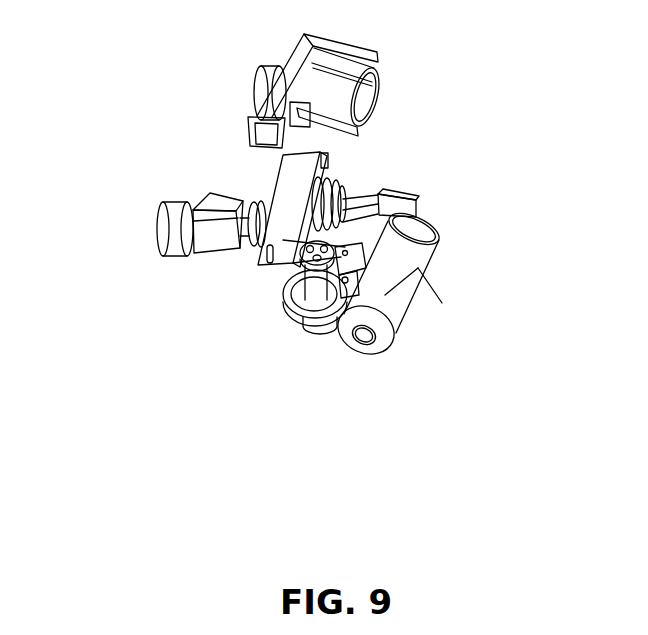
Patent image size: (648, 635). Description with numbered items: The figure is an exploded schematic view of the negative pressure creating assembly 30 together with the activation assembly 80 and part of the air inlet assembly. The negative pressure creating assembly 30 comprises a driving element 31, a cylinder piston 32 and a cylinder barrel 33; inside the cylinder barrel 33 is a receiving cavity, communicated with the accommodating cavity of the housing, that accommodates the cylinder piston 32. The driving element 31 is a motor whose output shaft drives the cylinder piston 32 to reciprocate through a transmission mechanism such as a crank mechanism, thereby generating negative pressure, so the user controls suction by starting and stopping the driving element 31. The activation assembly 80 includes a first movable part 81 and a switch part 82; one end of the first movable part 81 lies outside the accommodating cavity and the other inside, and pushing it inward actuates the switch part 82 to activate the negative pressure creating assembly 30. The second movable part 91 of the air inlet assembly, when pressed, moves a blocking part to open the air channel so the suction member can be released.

The negative pressure creating assembly 30 is at (443, 183).
The driving element 31 is at (418, 270).
The cylinder piston 32 is at (396, 186).
The cylinder barrel 33 is at (380, 64).
The activation assembly 80 is at (342, 381).
The first movable part 81 is at (336, 292).
The switch part 82 is at (360, 332).
The second movable part 91 is at (168, 236).